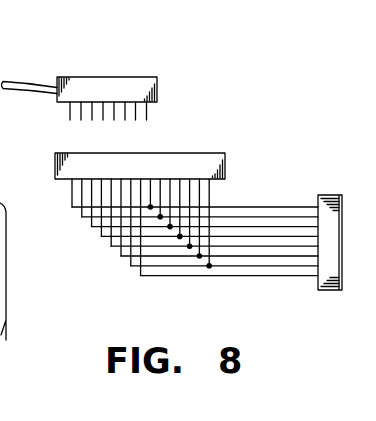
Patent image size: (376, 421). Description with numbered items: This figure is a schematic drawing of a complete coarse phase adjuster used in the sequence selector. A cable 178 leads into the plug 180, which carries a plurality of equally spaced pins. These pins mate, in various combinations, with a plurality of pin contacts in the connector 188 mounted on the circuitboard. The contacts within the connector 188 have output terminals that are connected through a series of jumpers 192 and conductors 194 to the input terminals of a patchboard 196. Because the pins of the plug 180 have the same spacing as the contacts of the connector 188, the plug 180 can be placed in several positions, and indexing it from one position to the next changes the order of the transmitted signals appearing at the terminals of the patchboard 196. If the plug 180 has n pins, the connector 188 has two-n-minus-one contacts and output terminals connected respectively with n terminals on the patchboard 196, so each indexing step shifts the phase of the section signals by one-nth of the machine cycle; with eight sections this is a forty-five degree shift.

The lead wire 178 is at (43, 82).
The plug 180 is at (128, 77).
The connector 188 is at (203, 153).
The jumpers 192 is at (106, 255).
The conductors 194 is at (280, 278).
The patchboard 196 is at (331, 195).